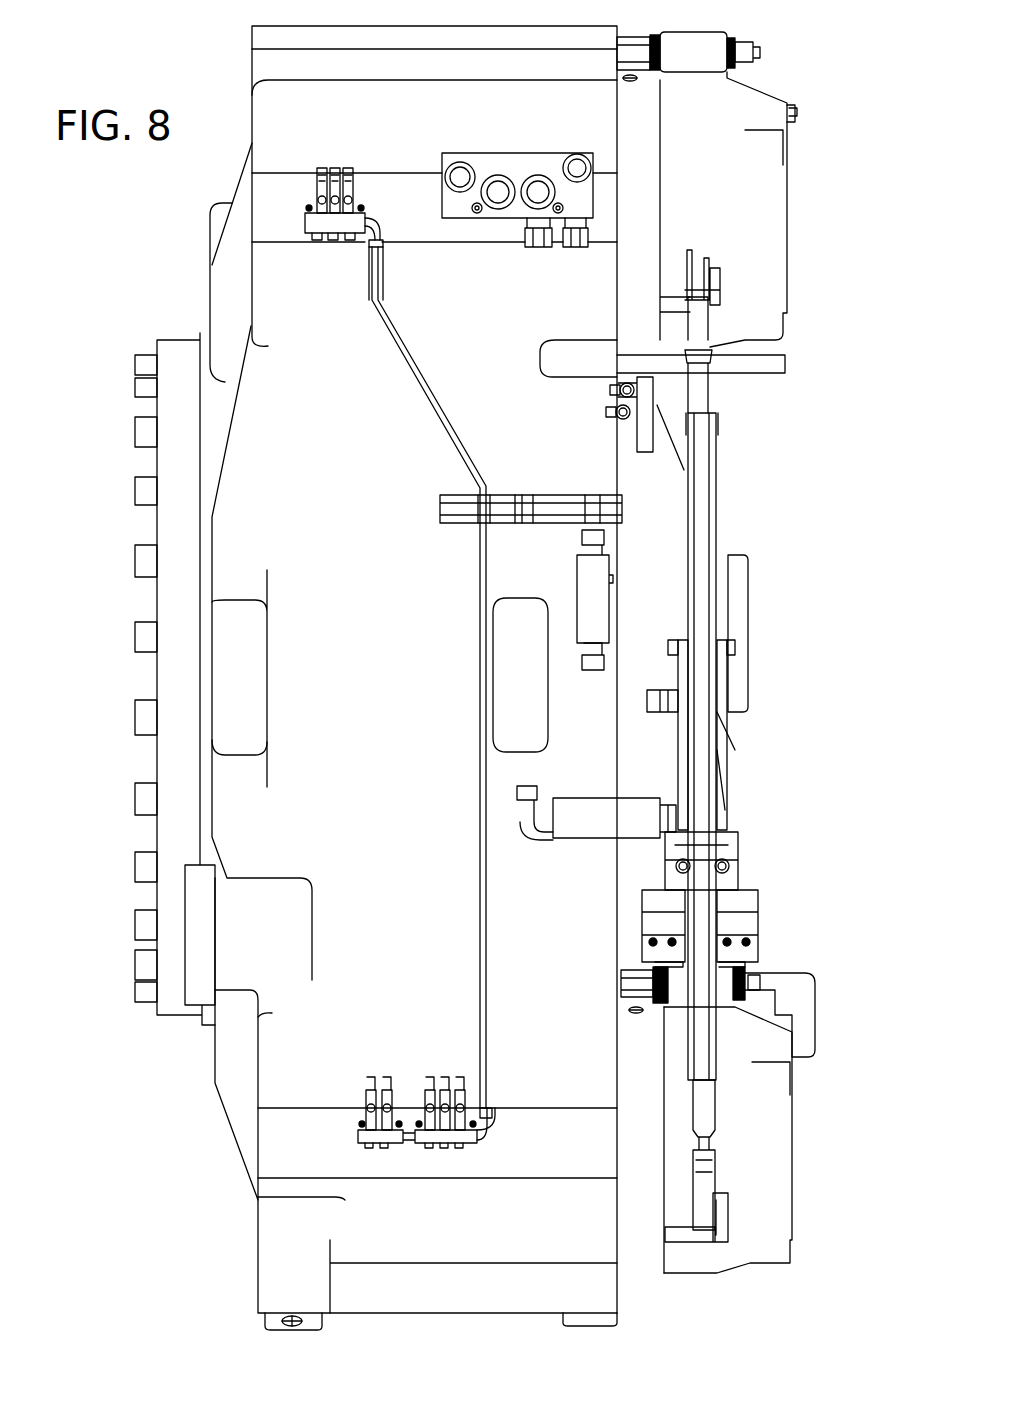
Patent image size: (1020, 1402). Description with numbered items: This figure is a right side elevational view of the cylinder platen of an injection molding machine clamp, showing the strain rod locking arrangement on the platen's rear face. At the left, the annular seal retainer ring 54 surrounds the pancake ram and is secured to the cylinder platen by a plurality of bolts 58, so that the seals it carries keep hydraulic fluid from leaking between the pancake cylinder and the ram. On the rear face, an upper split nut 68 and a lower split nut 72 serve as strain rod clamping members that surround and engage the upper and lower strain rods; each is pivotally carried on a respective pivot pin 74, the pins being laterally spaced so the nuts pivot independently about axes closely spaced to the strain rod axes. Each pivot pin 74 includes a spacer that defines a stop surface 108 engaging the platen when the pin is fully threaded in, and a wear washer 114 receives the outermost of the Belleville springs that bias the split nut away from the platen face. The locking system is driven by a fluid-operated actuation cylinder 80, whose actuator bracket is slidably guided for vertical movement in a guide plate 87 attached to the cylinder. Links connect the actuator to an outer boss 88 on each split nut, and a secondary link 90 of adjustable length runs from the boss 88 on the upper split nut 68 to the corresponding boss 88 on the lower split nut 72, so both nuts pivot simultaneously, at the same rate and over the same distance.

The seal retainer ring 54 is at (175, 410).
The bolts 58 is at (140, 553).
The upper split nut 68 is at (755, 190).
The lower split nut 72 is at (765, 1158).
The pivot pin 74 is at (745, 42).
The actuation cylinder 80 is at (720, 755).
The guide plate 87 is at (745, 630).
The outer boss 88 is at (710, 262).
The secondary link 90 is at (712, 478).
The stop surface 108 is at (633, 40).
The wear washer 114 is at (653, 70).